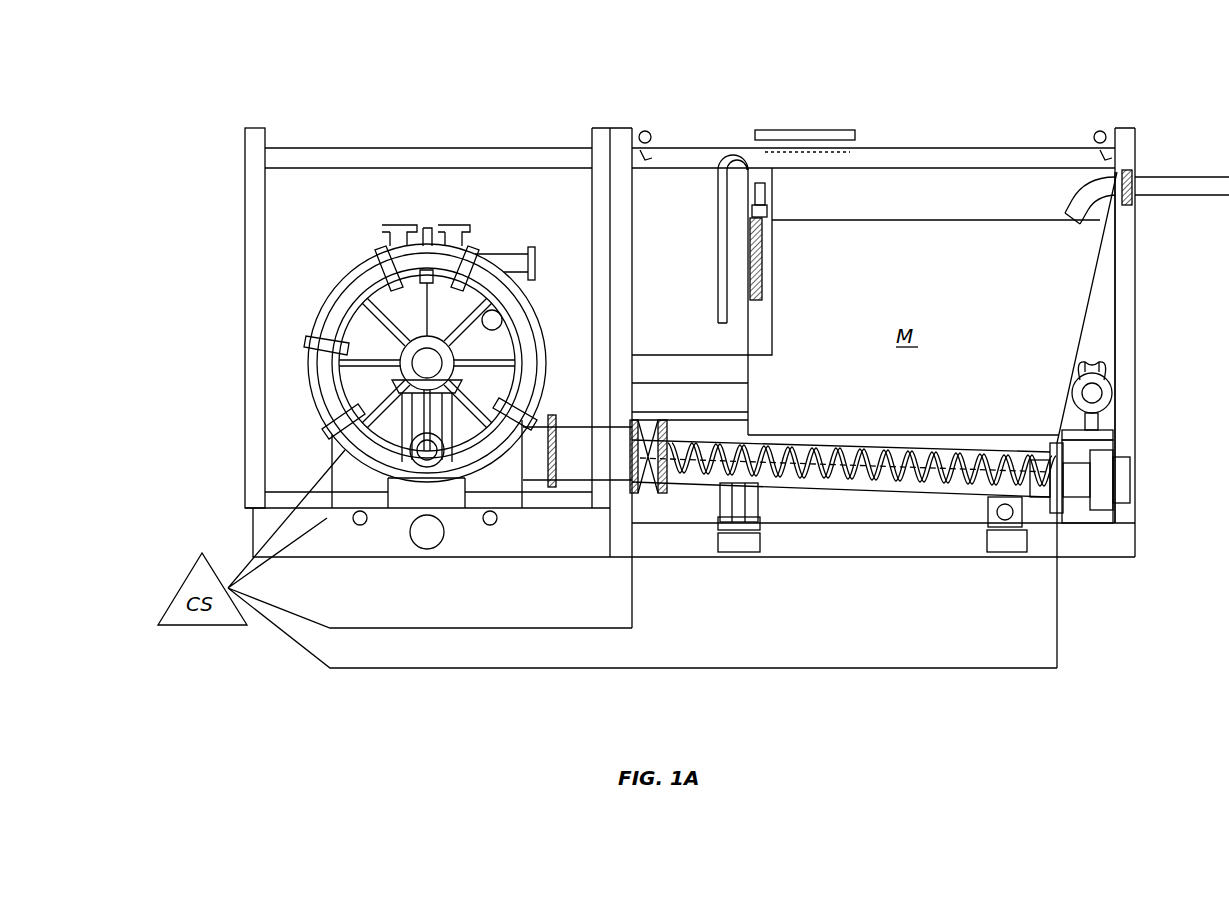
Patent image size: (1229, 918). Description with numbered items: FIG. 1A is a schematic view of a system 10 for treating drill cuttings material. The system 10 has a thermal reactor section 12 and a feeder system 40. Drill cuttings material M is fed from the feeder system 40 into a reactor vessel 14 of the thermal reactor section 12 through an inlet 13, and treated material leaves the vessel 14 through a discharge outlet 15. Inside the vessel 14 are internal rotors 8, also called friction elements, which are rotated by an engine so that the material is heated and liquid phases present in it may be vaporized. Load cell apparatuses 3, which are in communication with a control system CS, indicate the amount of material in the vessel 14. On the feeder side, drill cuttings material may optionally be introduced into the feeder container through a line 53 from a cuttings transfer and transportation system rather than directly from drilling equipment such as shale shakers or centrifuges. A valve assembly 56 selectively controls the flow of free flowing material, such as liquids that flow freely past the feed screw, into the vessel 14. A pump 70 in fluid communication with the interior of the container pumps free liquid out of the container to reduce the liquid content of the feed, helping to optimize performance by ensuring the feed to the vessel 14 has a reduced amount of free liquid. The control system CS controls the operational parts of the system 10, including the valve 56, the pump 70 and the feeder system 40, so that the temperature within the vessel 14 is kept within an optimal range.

The system 10 is at (268, 62).
The thermal reactor section 12 is at (256, 376).
The load cell apparatuses 3 is at (358, 524).
The reactor vessel 14 is at (362, 328).
The internal rotors 8 is at (380, 258).
The discharge outlet 15 is at (536, 266).
The inlet 13 is at (546, 494).
The feeder system 40 is at (1133, 296).
The line 53 is at (1155, 182).
The pump 70 is at (1105, 396).
The valve assembly 56 is at (655, 490).